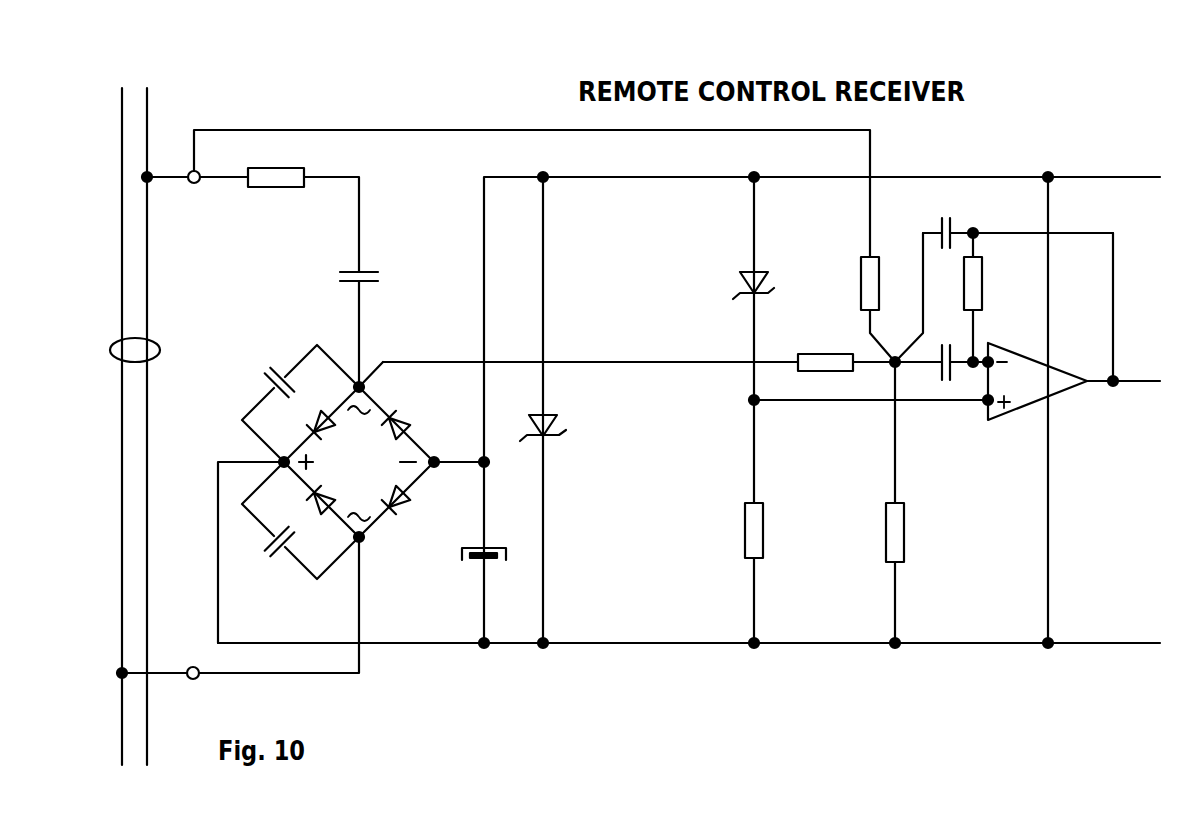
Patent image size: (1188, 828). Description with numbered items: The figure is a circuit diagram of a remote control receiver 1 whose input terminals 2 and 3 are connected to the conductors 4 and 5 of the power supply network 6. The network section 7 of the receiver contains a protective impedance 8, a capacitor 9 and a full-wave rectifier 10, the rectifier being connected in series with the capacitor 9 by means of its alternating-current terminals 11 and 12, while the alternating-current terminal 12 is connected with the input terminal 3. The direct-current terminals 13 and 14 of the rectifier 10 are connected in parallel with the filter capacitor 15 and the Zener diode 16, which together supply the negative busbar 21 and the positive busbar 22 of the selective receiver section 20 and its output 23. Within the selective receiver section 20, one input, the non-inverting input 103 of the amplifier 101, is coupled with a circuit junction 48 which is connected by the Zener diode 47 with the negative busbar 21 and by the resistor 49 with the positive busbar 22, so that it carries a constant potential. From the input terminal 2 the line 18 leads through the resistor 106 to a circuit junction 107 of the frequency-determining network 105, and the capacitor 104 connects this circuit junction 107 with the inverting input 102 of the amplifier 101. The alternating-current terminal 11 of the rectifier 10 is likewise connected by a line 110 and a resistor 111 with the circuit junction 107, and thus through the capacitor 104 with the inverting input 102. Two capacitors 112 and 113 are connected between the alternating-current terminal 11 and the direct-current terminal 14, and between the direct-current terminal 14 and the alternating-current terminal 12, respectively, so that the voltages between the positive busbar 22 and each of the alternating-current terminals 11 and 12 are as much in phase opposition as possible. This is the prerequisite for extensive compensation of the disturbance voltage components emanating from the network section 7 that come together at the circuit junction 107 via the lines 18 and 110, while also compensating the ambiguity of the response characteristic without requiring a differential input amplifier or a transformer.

The remote control receiver 1 is at (988, 156).
The input terminal 2 is at (190, 183).
The input terminal 3 is at (192, 666).
The conductor 4 is at (147, 267).
The conductor 5 is at (122, 310).
The power supply network 6 is at (160, 350).
The network section 7 is at (425, 309).
The protective impedance 8 is at (285, 188).
The capacitor 9 is at (352, 270).
The full-wave rectifier 10 is at (359, 462).
The alternating-current terminal 11 is at (366, 387).
The alternating-current terminal 12 is at (366, 537).
The direct-current terminal 13 is at (437, 468).
The direct-current terminal 14 is at (278, 460).
The filter capacitor 15 is at (472, 562).
The Zener diode 16 is at (560, 433).
The conductor or line 18 is at (449, 138).
The selective receiver section 20 is at (1020, 522).
The negative busbar 21 is at (1134, 179).
The positive busbar 22 is at (1118, 641).
The output terminal 23 is at (1113, 388).
The Zener diode 47 is at (740, 280).
The circuit point or junction 48 is at (748, 400).
The resistor 49 is at (745, 540).
The amplifier 101 is at (1075, 358).
The inverting input 102 is at (989, 355).
The non-inverting input 103 is at (988, 406).
The capacitor 104 is at (936, 382).
The frequency-determining network 105 is at (930, 283).
The resistor 106 is at (860, 280).
The circuit junction 107 is at (890, 366).
The conductor or line 110 is at (634, 352).
The resistor 111 is at (815, 348).
The capacitor 112 is at (270, 369).
The capacitor 113 is at (276, 555).